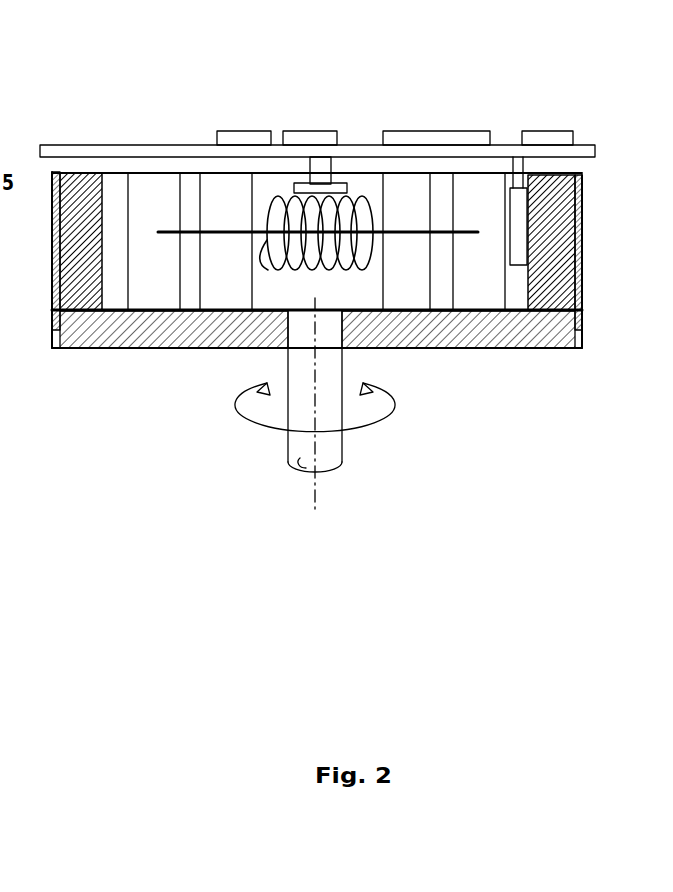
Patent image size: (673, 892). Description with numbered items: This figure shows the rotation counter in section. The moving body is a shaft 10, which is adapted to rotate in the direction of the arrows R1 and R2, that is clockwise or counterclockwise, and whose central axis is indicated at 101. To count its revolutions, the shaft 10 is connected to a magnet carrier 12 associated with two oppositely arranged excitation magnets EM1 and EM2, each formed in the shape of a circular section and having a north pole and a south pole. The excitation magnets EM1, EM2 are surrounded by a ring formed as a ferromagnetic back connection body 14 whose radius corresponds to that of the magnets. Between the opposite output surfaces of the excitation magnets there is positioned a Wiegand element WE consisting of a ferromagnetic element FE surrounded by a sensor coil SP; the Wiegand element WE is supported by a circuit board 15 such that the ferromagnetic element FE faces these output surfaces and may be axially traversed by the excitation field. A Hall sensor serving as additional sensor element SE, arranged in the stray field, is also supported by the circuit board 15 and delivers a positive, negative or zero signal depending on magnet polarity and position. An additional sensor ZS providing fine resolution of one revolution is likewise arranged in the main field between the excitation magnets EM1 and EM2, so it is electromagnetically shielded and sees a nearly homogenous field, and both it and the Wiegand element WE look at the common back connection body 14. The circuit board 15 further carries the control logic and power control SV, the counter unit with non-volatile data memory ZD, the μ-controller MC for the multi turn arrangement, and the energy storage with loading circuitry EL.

The back connection body 14 is at (58, 297).
The magnet carrier 12 is at (160, 332).
The circuit board 15 is at (200, 150).
The shaft 10 is at (332, 452).
The shaft axis 101 is at (312, 487).
The excitation magnet EM1 is at (80, 172).
The excitation magnet EM2 is at (583, 222).
The control logic and power control SV is at (247, 140).
The counter unit with non-volatile data memory ZD is at (314, 140).
The additional sensor ZS is at (337, 190).
The μ-controller MC is at (413, 140).
The additional sensor element SE is at (520, 210).
The energy storage with loading circuitry EL is at (543, 140).
The sensor coil SP is at (374, 254).
The ferromagnetic element FE is at (221, 231).
The Wiegand element WE is at (373, 282).
The arrow R1 is at (297, 407).
The arrow R2 is at (399, 398).